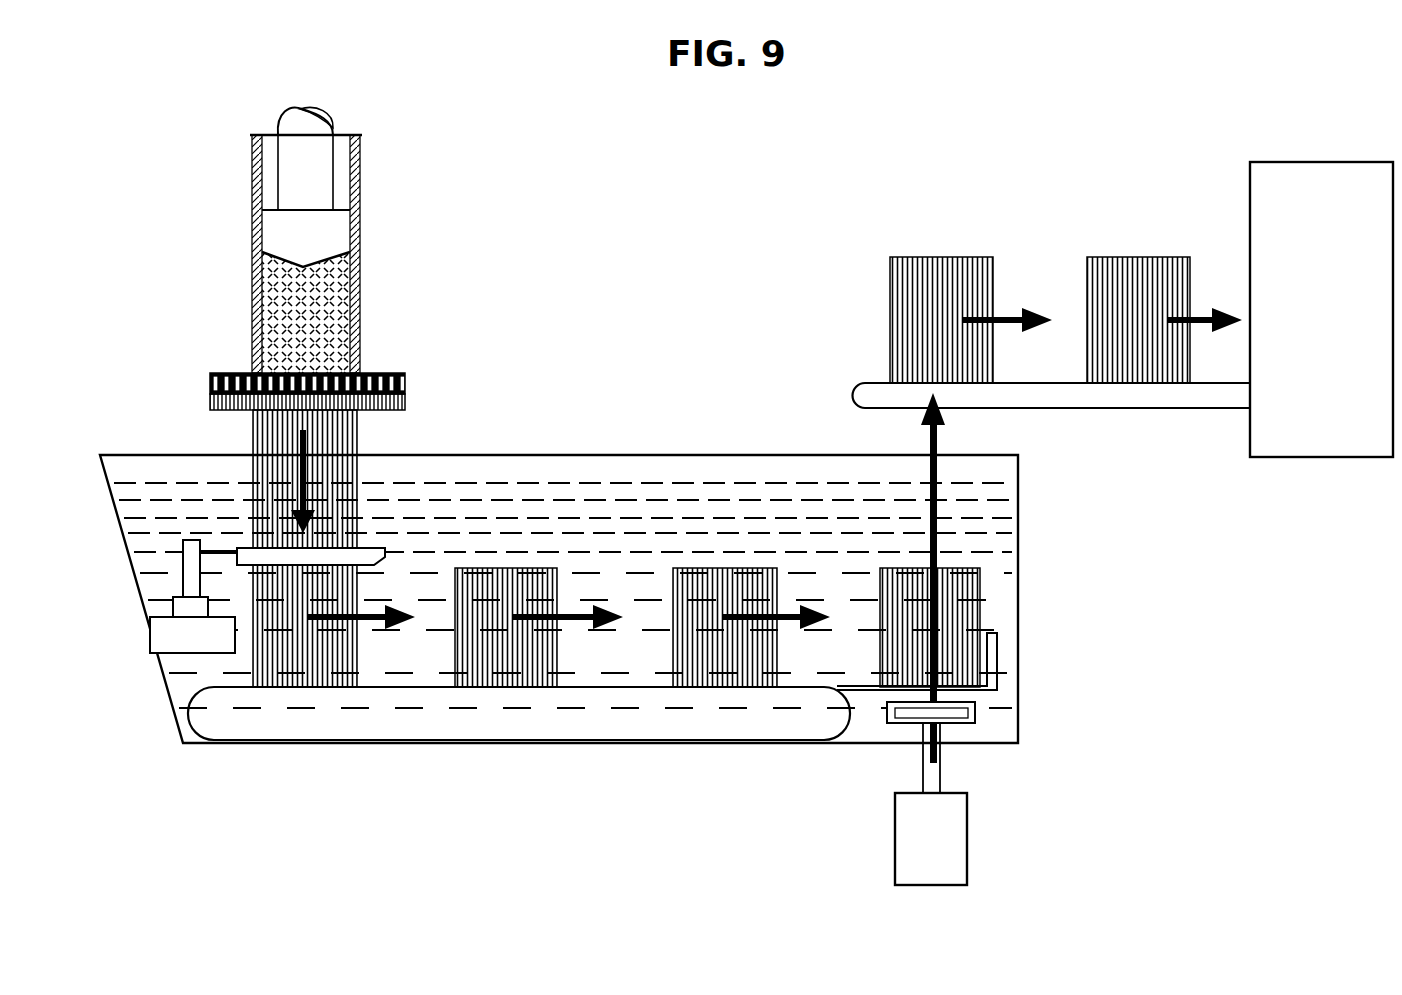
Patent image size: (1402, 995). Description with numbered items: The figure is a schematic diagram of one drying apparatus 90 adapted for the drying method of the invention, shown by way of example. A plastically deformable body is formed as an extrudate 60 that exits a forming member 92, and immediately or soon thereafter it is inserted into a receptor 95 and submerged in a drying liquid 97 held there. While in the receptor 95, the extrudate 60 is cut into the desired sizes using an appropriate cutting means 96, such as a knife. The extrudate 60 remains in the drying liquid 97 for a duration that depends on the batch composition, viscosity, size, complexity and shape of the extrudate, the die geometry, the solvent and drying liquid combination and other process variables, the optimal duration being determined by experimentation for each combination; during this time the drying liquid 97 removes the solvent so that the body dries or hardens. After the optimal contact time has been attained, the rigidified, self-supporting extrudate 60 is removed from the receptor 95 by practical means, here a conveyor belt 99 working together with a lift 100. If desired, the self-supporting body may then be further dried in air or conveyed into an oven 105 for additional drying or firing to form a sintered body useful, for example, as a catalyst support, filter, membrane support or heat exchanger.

The drying apparatus 90 is at (558, 118).
The forming member 92 is at (213, 282).
The extrudate 60 is at (357, 438).
The receptor 95 is at (652, 454).
The drying liquid 97 is at (760, 510).
The cutting means 96 is at (160, 559).
The conveyor belt 99 is at (843, 737).
The lift 100 is at (972, 772).
The oven 105 is at (1348, 219).